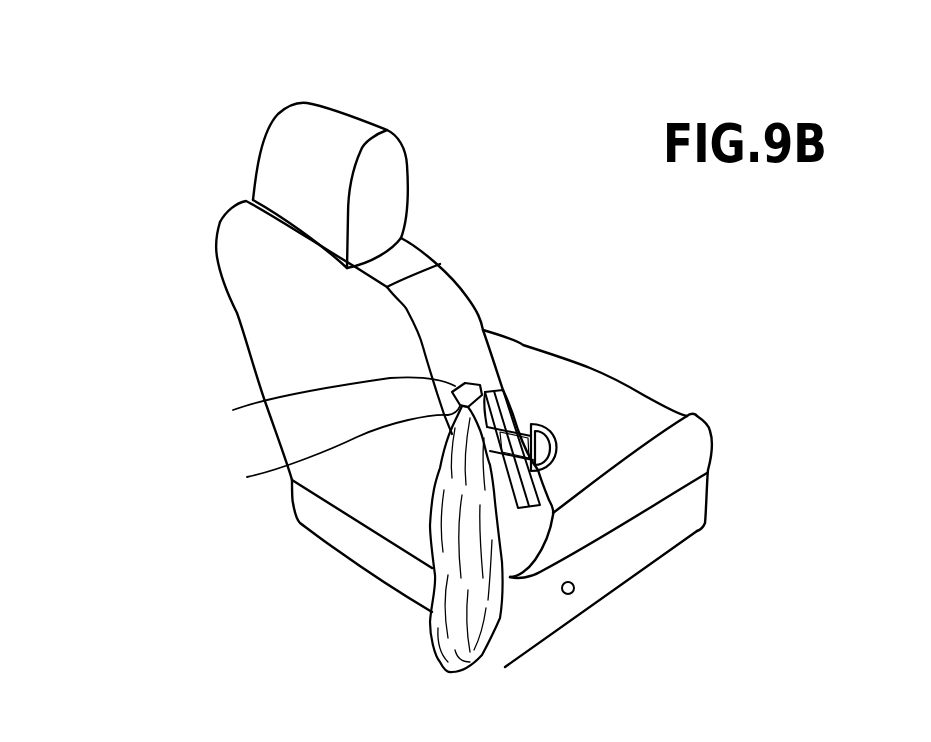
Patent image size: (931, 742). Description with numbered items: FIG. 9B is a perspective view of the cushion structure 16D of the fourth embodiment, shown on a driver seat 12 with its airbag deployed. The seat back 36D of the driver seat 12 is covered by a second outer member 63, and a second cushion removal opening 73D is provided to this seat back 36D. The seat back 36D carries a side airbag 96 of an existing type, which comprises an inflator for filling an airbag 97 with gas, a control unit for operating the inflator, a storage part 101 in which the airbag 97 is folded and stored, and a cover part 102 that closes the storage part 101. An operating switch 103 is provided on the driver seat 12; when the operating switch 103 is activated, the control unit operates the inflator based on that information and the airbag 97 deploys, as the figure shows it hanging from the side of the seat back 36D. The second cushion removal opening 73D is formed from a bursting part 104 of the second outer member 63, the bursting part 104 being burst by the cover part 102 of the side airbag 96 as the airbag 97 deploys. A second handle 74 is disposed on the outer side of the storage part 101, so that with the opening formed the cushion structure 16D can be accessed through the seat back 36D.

The driver seat 12 is at (458, 213).
The cushion structure 16D is at (200, 238).
The seat back 36D is at (243, 329).
The second outer member 63 is at (447, 307).
The second cushion removal opening 73D is at (508, 372).
The second handle 74 is at (560, 445).
The side airbag 96 is at (417, 513).
The airbag 97 is at (430, 637).
The storage part 101 is at (233, 410).
The cover part 102 is at (267, 477).
The operating switch 103 is at (574, 590).
The bursting part 104 is at (513, 410).